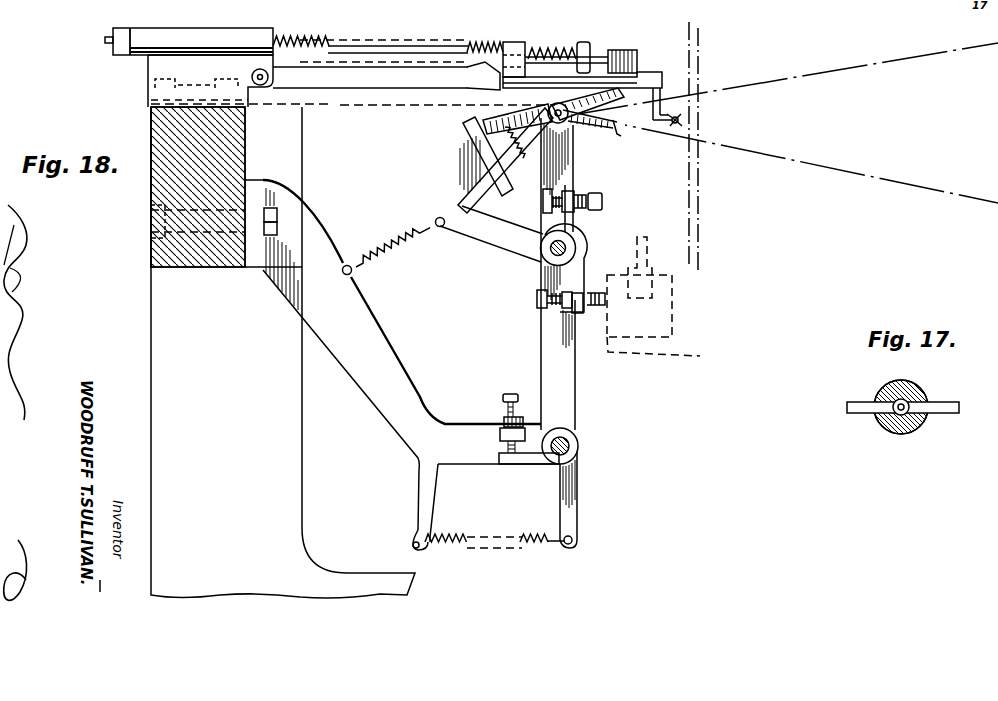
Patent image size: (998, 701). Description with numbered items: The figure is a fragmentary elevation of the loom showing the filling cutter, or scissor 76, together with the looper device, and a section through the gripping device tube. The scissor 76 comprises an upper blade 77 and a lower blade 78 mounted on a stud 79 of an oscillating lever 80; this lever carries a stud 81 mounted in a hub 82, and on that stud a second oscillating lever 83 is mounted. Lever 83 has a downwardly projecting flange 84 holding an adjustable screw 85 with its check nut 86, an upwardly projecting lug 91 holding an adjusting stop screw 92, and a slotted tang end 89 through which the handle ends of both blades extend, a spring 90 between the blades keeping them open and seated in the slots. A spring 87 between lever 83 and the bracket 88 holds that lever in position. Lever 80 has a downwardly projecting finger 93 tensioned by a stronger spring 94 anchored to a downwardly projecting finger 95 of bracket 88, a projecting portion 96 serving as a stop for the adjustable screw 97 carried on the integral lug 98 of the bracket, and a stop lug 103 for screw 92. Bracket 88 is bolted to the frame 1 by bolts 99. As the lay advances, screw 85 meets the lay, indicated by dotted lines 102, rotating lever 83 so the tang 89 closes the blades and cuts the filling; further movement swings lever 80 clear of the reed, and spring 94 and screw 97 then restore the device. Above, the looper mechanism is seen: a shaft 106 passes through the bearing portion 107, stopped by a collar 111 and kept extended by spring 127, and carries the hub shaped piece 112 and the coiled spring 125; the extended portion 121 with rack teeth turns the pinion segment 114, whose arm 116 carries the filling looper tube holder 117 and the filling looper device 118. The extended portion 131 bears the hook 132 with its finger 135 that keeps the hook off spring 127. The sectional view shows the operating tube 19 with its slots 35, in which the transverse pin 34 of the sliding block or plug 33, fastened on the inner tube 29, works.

In FIG. 18, the frame 1 is at (152, 301).
In FIG. 18, the shaft 106 is at (108, 40).
In FIG. 18, the bearing portion 107 is at (208, 42).
In FIG. 18, the collar 111 is at (186, 81).
In FIG. 18, the spring 127 is at (314, 48).
In FIG. 18, the extended portion 131 is at (392, 83).
In FIG. 18, the hook 132 is at (470, 73).
In FIG. 18, the finger 135 is at (489, 95).
In FIG. 18, the hub shaped piece 112 is at (506, 42).
In FIG. 18, the coiled spring 125 is at (541, 56).
In FIG. 18, the extended portion 121 is at (603, 55).
In FIG. 18, the pinion segment 114 is at (652, 48).
In FIG. 18, the upper blade 77 is at (623, 91).
In FIG. 18, the arm 116 is at (700, 69).
In FIG. 18, the filling looper tube holder 117 is at (713, 99).
In FIG. 18, the filling looper device 118 is at (690, 116).
In FIG. 18, the stud 79 is at (552, 107).
In FIG. 18, the scissor 76 is at (590, 128).
In FIG. 18, the lower blade 78 is at (629, 136).
In FIG. 18, the oscillating lever 80 is at (574, 168).
In FIG. 18, the tang end 89 is at (466, 137).
In FIG. 18, the spring 90 is at (512, 192).
In FIG. 18, the spring 87 is at (387, 239).
In FIG. 18, the second oscillating lever 83 is at (472, 233).
In FIG. 18, the hub 82 is at (547, 247).
In FIG. 18, the stud 81 is at (556, 250).
In FIG. 18, the downwardly projecting flange 84 is at (585, 268).
In FIG. 18, the stop lug 103 is at (570, 187).
In FIG. 18, the adjusting stop screw 92 is at (590, 193).
In FIG. 18, the upwardly projecting lug 91 is at (573, 224).
In FIG. 18, the check nut 86 is at (563, 307).
In FIG. 18, the adjustable screw 85 is at (592, 313).
In FIG. 18, the dotted lines 102 is at (679, 317).
In FIG. 18, the bracket 88 is at (385, 392).
In FIG. 18, the bolts 99 is at (277, 220).
In FIG. 18, the downwardly projecting finger 95 is at (417, 487).
In FIG. 18, the projecting portion 96 is at (512, 462).
In FIG. 18, the adjustable screw 97 is at (503, 447).
In FIG. 18, the integral lug 98 is at (525, 423).
In FIG. 18, the downwardly projecting finger 93 is at (569, 491).
In FIG. 18, the spring 94 is at (535, 548).
In FIG. 17, the operating tube 19 is at (897, 393).
In FIG. 17, the slots 35 is at (872, 400).
In FIG. 17, the transverse pin 34 is at (940, 402).
In FIG. 17, the sliding block or plug 33 is at (910, 400).
In FIG. 17, the inner tube 29 is at (887, 420).